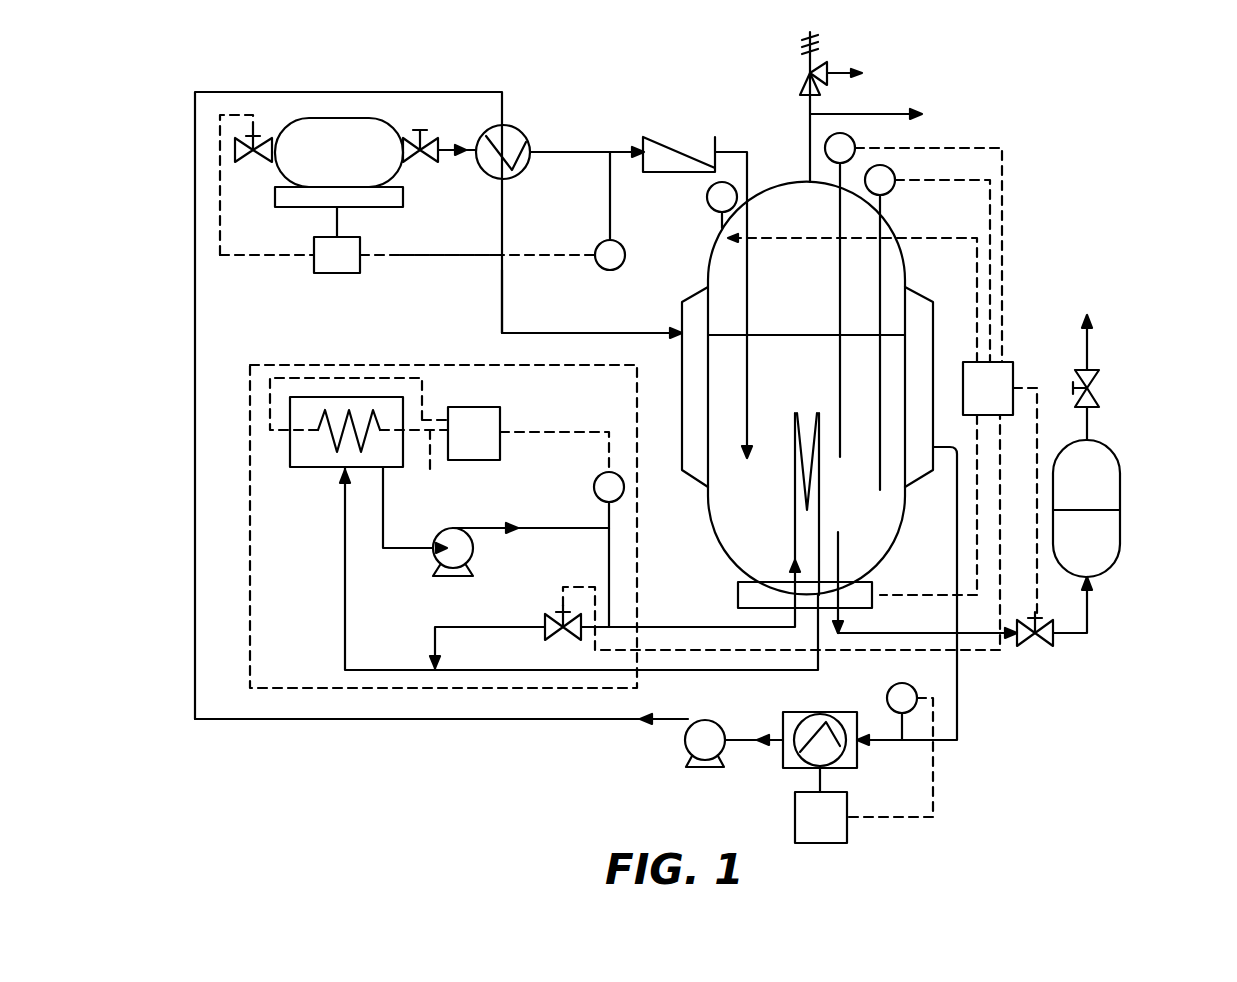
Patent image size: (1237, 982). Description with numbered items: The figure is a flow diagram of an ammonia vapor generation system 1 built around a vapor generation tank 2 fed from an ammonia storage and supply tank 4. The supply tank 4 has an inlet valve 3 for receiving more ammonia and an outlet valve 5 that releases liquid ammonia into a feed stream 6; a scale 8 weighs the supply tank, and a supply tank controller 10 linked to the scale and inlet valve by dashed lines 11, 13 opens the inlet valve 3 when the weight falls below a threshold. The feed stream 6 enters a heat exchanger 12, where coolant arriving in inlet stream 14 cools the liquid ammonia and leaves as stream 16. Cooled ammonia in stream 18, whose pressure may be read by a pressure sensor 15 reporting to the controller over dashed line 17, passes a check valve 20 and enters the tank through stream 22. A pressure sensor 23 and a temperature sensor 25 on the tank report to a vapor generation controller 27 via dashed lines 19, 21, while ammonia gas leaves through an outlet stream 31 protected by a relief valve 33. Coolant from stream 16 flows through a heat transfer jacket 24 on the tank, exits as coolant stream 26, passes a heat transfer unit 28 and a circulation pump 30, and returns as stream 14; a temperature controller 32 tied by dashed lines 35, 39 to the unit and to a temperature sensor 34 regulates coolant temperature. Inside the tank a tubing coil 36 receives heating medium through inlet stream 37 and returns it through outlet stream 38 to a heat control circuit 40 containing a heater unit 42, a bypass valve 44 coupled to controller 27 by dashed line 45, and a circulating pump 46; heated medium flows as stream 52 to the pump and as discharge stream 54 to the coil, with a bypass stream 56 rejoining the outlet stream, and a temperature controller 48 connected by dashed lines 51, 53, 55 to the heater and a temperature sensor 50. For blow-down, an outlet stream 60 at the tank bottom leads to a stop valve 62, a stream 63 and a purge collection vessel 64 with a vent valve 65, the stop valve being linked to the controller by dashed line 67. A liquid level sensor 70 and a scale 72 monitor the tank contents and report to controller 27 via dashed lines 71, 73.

The ammonia vapor generation system 1 is at (1138, 100).
The vapor generation tank 2 is at (712, 252).
The inlet valve 3 is at (247, 163).
The ammonia storage and supply tank 4 is at (339, 152).
The outlet valve 5 is at (430, 138).
The feed stream 6 is at (445, 152).
The scale 8 is at (404, 198).
The supply tank controller 10 is at (337, 255).
The dashed line 11 is at (340, 213).
The heat exchanger 12 is at (526, 133).
The dashed line 13 is at (282, 256).
The inlet stream 14 is at (440, 92).
The pressure sensor 15 is at (612, 270).
The stream 16 is at (503, 300).
The dashed line 17 is at (408, 256).
The stream 18 is at (582, 148).
The dashed line 19 is at (775, 245).
The check valve 20 is at (670, 145).
The dashed line 21 is at (937, 150).
The stream 22 is at (733, 150).
The pressure sensor 23 is at (707, 197).
The heat transfer jacket 24 is at (680, 313).
The temperature sensor 25 is at (852, 137).
The coolant stream 26 is at (958, 678).
The vapor generation controller 27 is at (988, 388).
The heat transfer unit 28 is at (802, 712).
The circulation pump 30 is at (685, 740).
The outlet stream 31 is at (868, 114).
The temperature controller 32 is at (821, 817).
The relief valve 33 is at (820, 56).
The temperature sensor 34 is at (887, 698).
The dashed line 35 is at (824, 775).
The tubing coil 36 is at (820, 495).
The inlet stream 37 is at (648, 627).
The outlet stream 38 is at (683, 672).
The dashed line 39 is at (905, 820).
The heat control circuit 40 is at (250, 525).
The heater unit 42 is at (322, 468).
The bypass valve 44 is at (558, 642).
The dashed line 45 is at (590, 582).
The circulating pump 46 is at (474, 550).
The temperature controller 48 is at (474, 433).
The temperature sensor 50 is at (596, 482).
The dashed line 51 is at (425, 396).
The stream 52 is at (384, 504).
The dashed line 53 is at (433, 464).
The discharge stream 54 is at (480, 528).
The dashed line 55 is at (538, 432).
The bypass stream 56 is at (505, 627).
The outlet stream 60 is at (880, 633).
The stop valve 62 is at (1030, 645).
The stream 63 is at (1088, 600).
The purge collection vessel 64 is at (1121, 492).
The valve 65 is at (1100, 378).
The dashed line 67 is at (1033, 478).
The liquid level sensor 70 is at (892, 170).
The dashed line 71 is at (962, 190).
The scale 72 is at (738, 592).
The dashed line 73 is at (898, 598).